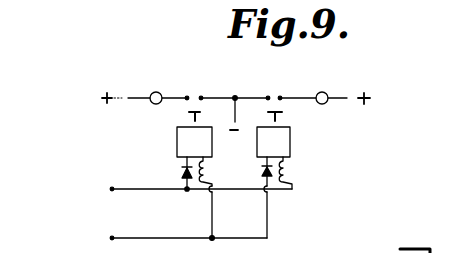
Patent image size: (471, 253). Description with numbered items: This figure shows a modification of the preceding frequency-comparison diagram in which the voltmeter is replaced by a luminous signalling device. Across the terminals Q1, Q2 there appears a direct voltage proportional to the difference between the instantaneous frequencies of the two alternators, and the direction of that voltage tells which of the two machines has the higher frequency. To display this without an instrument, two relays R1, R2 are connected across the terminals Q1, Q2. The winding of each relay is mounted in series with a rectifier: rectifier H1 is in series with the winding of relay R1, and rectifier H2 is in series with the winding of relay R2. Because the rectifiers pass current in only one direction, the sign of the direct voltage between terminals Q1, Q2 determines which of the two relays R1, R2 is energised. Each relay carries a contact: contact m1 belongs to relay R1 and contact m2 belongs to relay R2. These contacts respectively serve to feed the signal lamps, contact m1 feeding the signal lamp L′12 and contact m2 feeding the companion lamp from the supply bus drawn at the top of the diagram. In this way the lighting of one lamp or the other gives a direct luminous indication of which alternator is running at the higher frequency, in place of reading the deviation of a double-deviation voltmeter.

The signal lamp L′12 is at (160, 81).
The contact m1 is at (182, 114).
The contact m2 is at (287, 114).
The relay R1 is at (194, 142).
The relay R2 is at (273, 142).
The rectifier H1 is at (181, 170).
The rectifier H2 is at (262, 168).
The terminal Q1 is at (188, 181).
The terminal Q2 is at (175, 231).